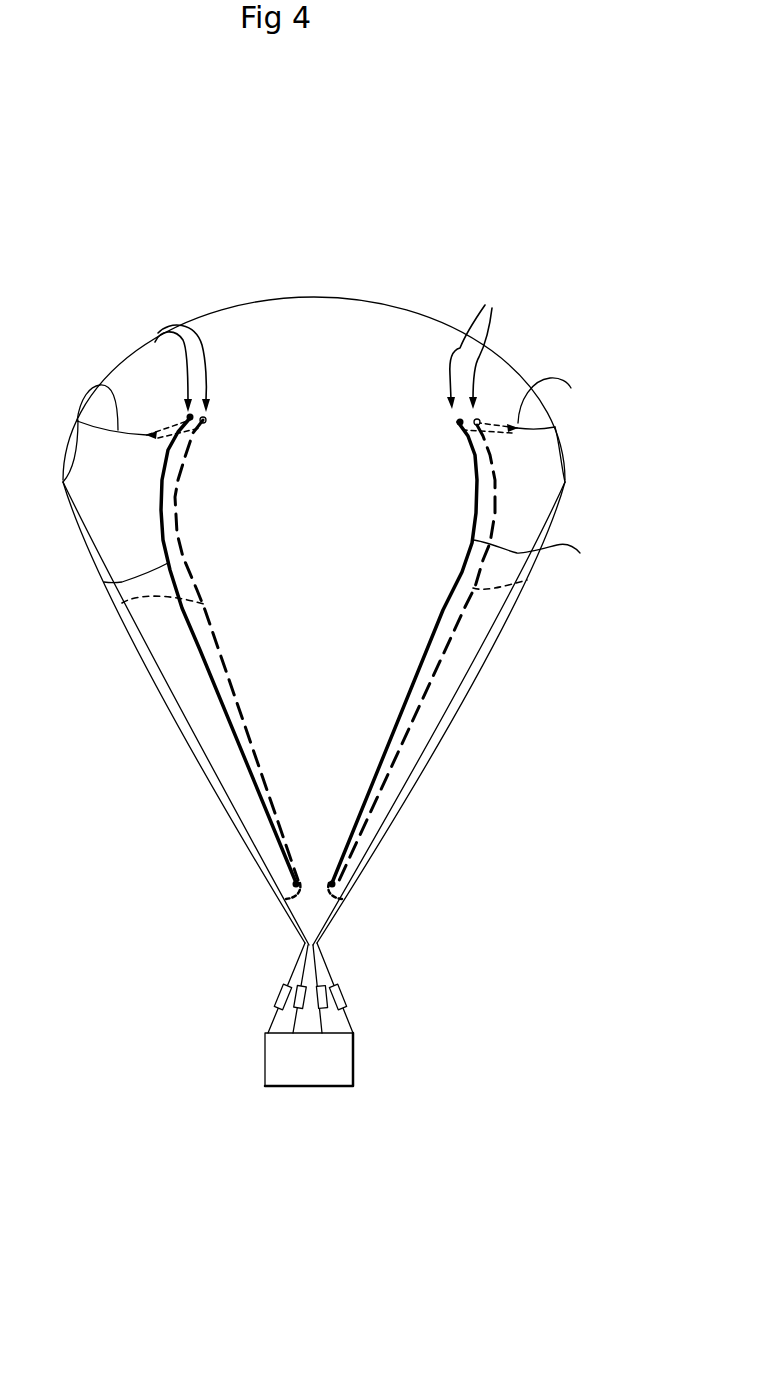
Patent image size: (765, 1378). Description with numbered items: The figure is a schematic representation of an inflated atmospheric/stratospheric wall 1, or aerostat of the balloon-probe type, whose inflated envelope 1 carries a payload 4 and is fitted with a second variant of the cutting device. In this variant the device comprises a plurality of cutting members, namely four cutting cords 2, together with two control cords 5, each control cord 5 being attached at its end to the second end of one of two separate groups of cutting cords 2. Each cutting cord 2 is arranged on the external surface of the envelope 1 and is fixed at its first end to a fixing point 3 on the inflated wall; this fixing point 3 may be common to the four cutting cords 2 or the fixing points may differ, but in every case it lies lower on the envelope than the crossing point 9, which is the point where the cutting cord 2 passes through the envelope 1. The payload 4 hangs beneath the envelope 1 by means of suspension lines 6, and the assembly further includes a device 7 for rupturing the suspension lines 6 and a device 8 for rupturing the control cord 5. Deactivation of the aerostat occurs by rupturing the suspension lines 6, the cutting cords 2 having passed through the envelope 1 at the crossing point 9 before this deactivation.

The inflated envelope 1 is at (178, 722).
The cutting cord 2 is at (113, 605).
The fixing point 3 is at (296, 897).
The payload 4 is at (317, 1075).
The control cord 5 is at (90, 385).
The suspension lines 6 is at (267, 1017).
The device for rupturing the suspension lines 7 is at (278, 990).
The device for rupturing the control cord 8 is at (298, 984).
The crossing point 9 is at (155, 342).